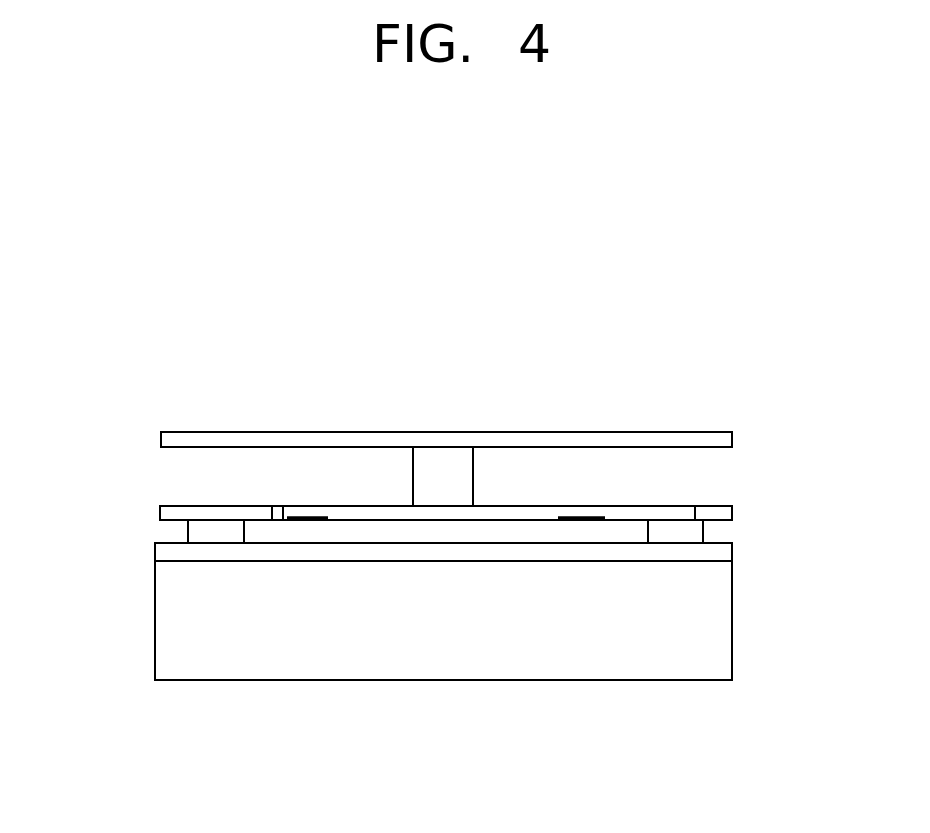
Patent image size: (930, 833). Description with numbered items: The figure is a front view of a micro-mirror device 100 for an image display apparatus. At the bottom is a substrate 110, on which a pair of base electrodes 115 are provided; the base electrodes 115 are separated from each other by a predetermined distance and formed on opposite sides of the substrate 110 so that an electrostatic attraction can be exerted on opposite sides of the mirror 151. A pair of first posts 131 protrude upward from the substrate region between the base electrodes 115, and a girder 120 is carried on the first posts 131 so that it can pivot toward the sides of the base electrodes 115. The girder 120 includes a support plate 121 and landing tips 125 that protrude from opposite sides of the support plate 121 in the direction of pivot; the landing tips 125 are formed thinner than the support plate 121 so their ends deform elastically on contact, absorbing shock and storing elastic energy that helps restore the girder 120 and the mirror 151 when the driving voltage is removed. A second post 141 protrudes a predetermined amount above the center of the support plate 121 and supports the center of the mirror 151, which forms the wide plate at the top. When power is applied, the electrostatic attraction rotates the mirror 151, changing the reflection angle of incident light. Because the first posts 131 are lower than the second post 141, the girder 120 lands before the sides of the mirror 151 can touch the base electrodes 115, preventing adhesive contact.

The micro-mirror device 100 is at (131, 361).
The substrate 110 is at (713, 626).
The base electrodes 115 is at (712, 553).
The girder 120 is at (709, 502).
The support plate 121 is at (388, 510).
The landing tips 125 is at (580, 520).
The first posts 131 is at (214, 533).
The second post 141 is at (451, 467).
The mirror 151 is at (594, 441).